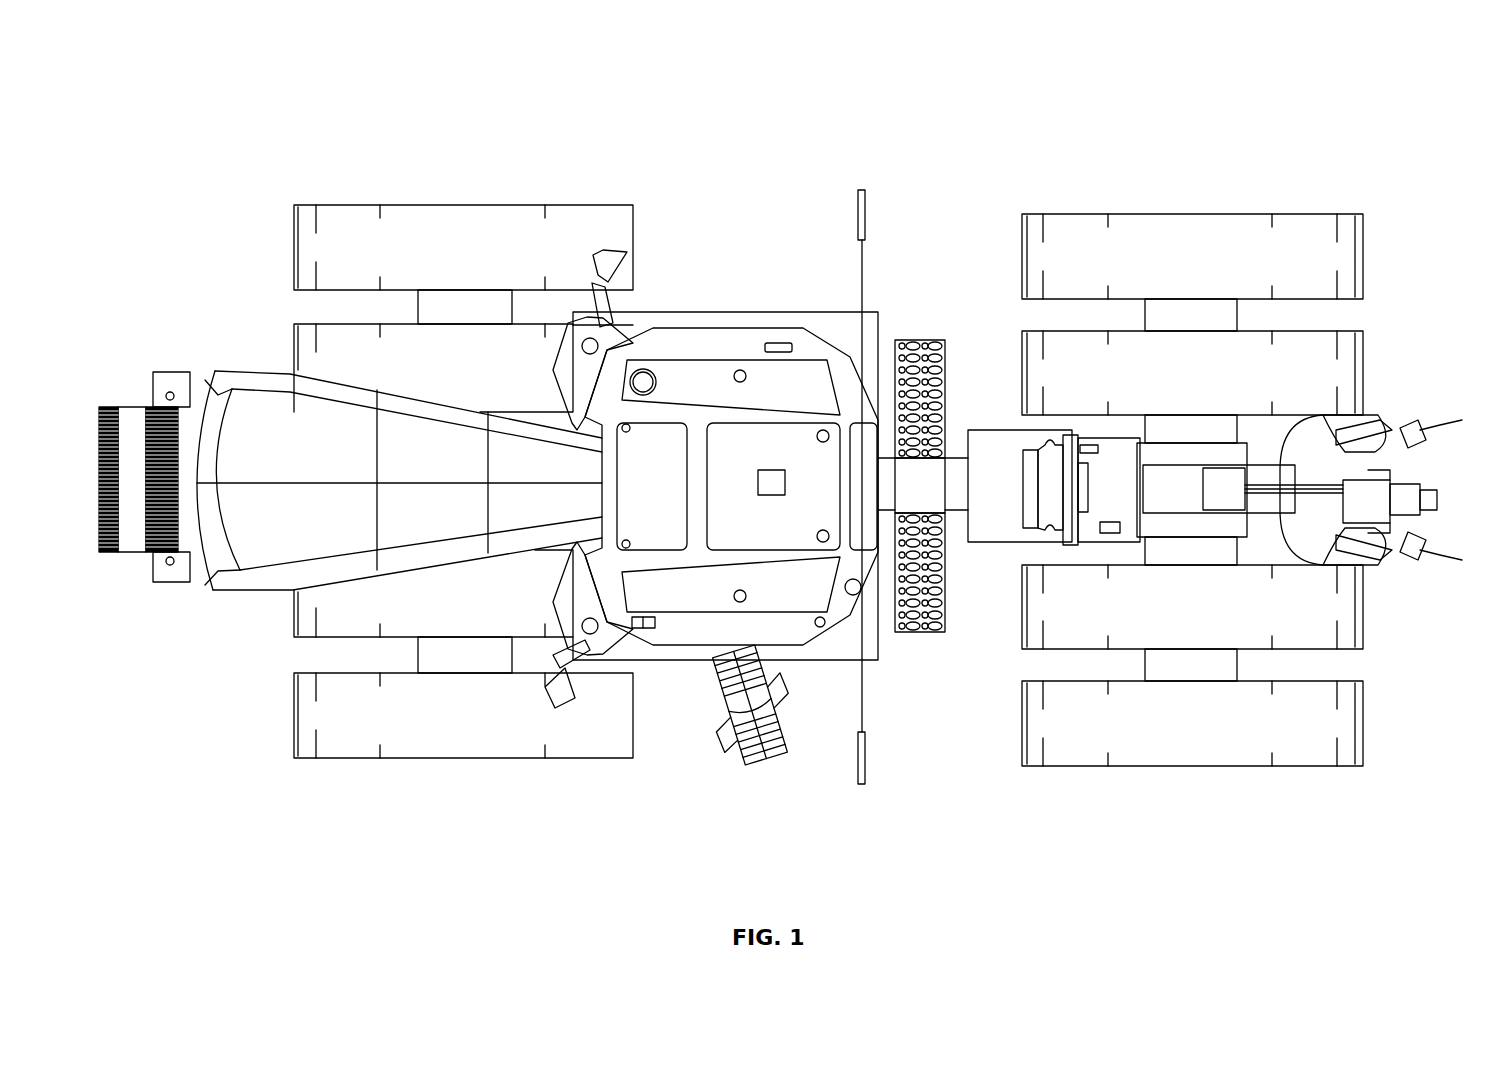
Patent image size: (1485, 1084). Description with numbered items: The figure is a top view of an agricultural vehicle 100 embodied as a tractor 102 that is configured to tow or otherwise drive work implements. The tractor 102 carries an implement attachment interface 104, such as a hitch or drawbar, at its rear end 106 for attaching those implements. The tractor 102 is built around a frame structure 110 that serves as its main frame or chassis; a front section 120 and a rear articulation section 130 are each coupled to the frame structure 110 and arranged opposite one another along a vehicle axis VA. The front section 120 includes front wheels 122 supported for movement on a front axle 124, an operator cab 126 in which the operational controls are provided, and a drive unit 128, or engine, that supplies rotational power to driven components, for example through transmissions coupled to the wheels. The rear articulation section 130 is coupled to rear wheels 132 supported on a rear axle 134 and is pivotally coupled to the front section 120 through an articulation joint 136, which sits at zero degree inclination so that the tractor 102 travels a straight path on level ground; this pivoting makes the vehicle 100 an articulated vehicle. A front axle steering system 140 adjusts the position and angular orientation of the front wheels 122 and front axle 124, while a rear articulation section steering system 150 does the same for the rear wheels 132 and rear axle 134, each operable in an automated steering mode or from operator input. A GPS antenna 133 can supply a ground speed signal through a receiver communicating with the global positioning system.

The agricultural vehicle 100 is at (1112, 100).
The tractor 102 is at (997, 180).
The implement attachment interface 104 is at (1436, 488).
The rear end 106 is at (1373, 447).
The frame structure 110 is at (683, 320).
The front section 120 is at (407, 443).
The front wheels 122 is at (308, 335).
The front axle 124 is at (433, 303).
The operator cab 126 is at (685, 385).
The drive unit 128 is at (232, 523).
The rear articulation section 130 is at (977, 450).
The rear wheels 132 is at (1305, 702).
The GPS antenna 133 is at (760, 470).
The rear axle 134 is at (1202, 315).
The articulation joint 136 is at (917, 492).
The front axle steering system 140 is at (660, 513).
The rear articulation section steering system 150 is at (807, 505).
The vehicle axis VA is at (275, 483).